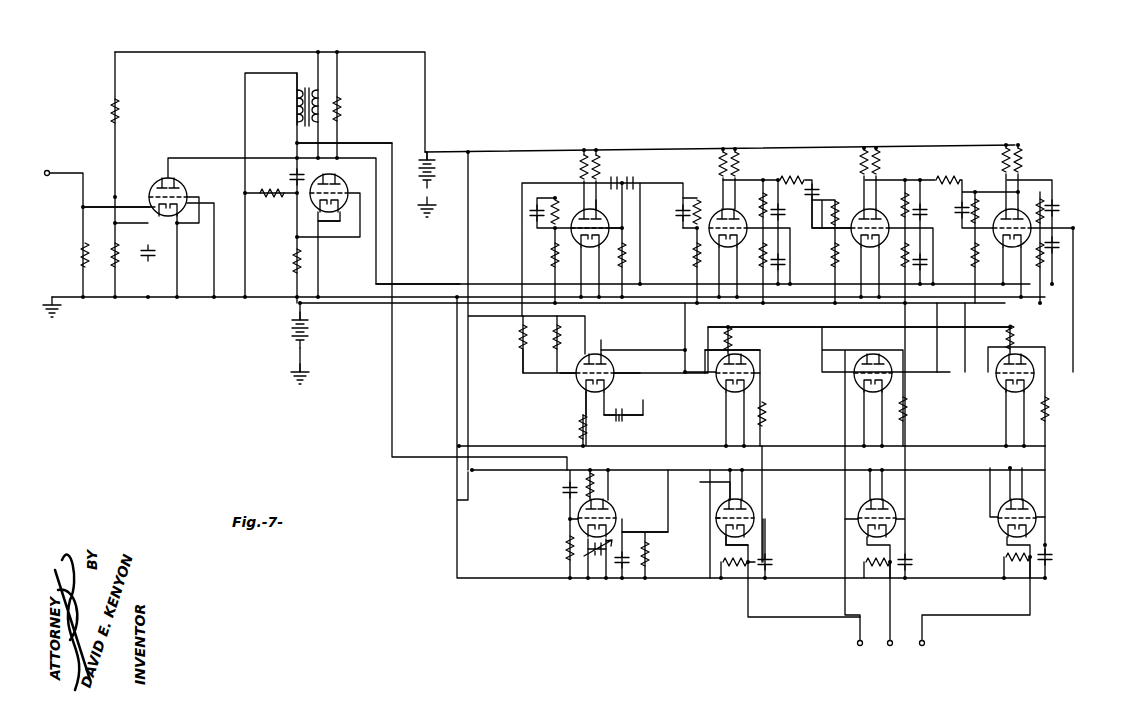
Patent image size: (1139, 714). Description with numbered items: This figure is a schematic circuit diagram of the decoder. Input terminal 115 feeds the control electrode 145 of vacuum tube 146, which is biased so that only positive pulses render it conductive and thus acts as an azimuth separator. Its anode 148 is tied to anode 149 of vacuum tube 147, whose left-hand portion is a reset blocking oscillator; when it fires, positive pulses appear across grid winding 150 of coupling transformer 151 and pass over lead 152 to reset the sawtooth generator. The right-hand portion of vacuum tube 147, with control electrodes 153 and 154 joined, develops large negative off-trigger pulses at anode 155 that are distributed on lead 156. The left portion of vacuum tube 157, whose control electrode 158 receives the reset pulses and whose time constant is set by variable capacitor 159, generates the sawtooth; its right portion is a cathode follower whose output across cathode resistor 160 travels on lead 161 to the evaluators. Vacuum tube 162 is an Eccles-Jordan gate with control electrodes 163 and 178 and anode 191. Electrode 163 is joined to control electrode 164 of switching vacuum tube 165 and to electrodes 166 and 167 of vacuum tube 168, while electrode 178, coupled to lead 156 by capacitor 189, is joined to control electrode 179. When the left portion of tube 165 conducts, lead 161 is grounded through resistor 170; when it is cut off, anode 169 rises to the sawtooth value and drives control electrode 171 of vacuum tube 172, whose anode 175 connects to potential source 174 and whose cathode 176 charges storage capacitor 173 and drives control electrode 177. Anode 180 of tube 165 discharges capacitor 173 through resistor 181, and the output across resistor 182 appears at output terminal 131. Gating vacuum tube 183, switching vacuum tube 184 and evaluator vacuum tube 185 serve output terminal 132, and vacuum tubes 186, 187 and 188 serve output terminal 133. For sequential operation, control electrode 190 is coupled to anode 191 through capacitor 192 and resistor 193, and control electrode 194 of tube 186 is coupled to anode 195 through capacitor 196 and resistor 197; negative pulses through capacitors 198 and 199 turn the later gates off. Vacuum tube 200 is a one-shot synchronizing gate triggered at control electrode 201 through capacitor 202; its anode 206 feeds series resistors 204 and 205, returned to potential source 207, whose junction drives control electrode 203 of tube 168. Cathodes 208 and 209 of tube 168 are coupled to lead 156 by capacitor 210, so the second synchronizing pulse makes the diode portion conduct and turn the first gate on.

The input terminal 115 is at (45, 172).
The output terminal 131 is at (862, 649).
The output terminal 132 is at (889, 647).
The output terminal 133 is at (923, 648).
The control electrode 145 is at (162, 203).
The vacuum tube 146 is at (150, 182).
The vacuum tube 147 is at (305, 216).
The anode 148 is at (178, 185).
The anode 149 is at (290, 177).
The grid winding 150 is at (296, 111).
The coupling transformer 151 is at (298, 80).
The lead 152 is at (360, 143).
The control electrode 153 is at (290, 200).
The control electrode 154 is at (341, 240).
The anode 155 is at (341, 154).
The lead 156 is at (376, 284).
The vacuum tube 157 is at (578, 511).
The control electrode 158 is at (574, 536).
The variable capacitor 159 is at (597, 567).
The cathode resistor 160 is at (650, 566).
The lead 161 is at (668, 488).
The vacuum tube 162 is at (740, 186).
The control electrode 163 is at (708, 229).
The control electrode 164 is at (716, 376).
The switching vacuum tube 165 is at (745, 359).
The electrode 166 is at (604, 354).
The electrode 167 is at (626, 366).
The vacuum tube 168 is at (601, 341).
The anode 169 is at (725, 341).
The resistor 170 is at (735, 331).
The control electrode 171 is at (720, 536).
The vacuum tube 172 is at (716, 516).
The storage capacitor 173 is at (773, 563).
The source of potential 174 is at (420, 196).
The anode 175 is at (702, 487).
The cathode 176 is at (722, 546).
The control electrode 177 is at (750, 509).
The control electrode 178 is at (745, 196).
The control electrode 179 is at (756, 376).
The anode 180 is at (736, 353).
The resistor 181 is at (766, 421).
The resistor 182 is at (730, 566).
The gating vacuum tube 183 is at (880, 214).
The switching vacuum tube 184 is at (878, 358).
The evaluator vacuum tube 185 is at (855, 529).
The vacuum tube 186 is at (1020, 213).
The vacuum tube 187 is at (1022, 353).
The vacuum tube 188 is at (1036, 506).
The capacitor 189 is at (785, 263).
The control electrode 190 is at (844, 256).
The anode 191 is at (705, 200).
The capacitor 192 is at (828, 189).
The resistor 193 is at (795, 176).
The control electrode 194 is at (992, 207).
The anode 195 is at (852, 216).
The capacitor 196 is at (960, 193).
The resistor 197 is at (946, 179).
The capacitor 198 is at (935, 258).
The capacitor 199 is at (1062, 246).
The vacuum tube 200 is at (605, 216).
The control electrode 201 is at (626, 230).
The capacitor 202 is at (627, 181).
The control electrode 203 is at (580, 379).
The resistor 204 is at (518, 341).
The resistor 205 is at (550, 351).
The anode 206 is at (578, 218).
The potential source 207 is at (290, 338).
The cathode 208 is at (582, 393).
The cathode 209 is at (624, 406).
The capacitor 210 is at (620, 421).